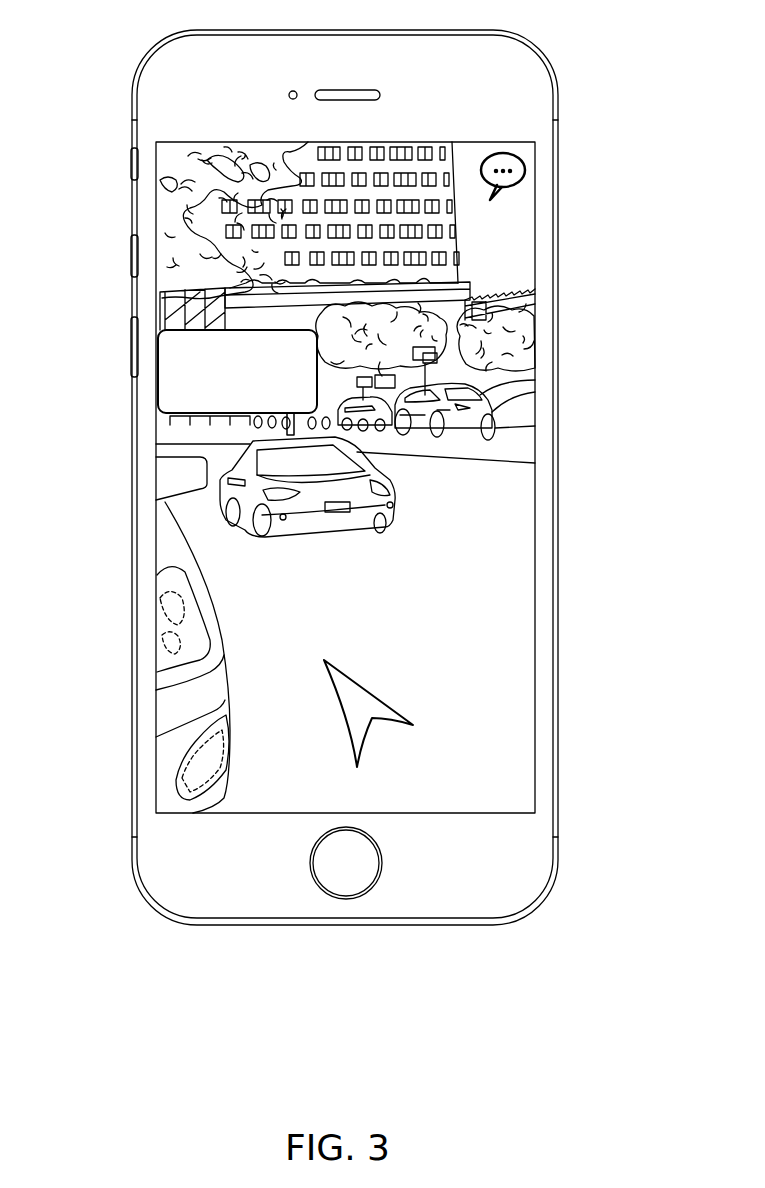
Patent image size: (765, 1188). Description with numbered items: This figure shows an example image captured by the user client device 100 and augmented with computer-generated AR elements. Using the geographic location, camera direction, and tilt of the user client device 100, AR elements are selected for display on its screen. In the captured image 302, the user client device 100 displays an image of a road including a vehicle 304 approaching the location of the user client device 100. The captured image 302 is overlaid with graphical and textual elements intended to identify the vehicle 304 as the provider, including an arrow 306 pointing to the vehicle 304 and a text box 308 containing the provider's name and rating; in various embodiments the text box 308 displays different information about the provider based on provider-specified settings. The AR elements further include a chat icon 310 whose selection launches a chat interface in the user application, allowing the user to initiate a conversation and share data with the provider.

The user client device 100 is at (573, 100).
The captured image 302 is at (168, 275).
The vehicle 304 is at (232, 462).
The arrow 306 is at (447, 708).
The text box 308 is at (158, 375).
The chat icon 310 is at (533, 167).